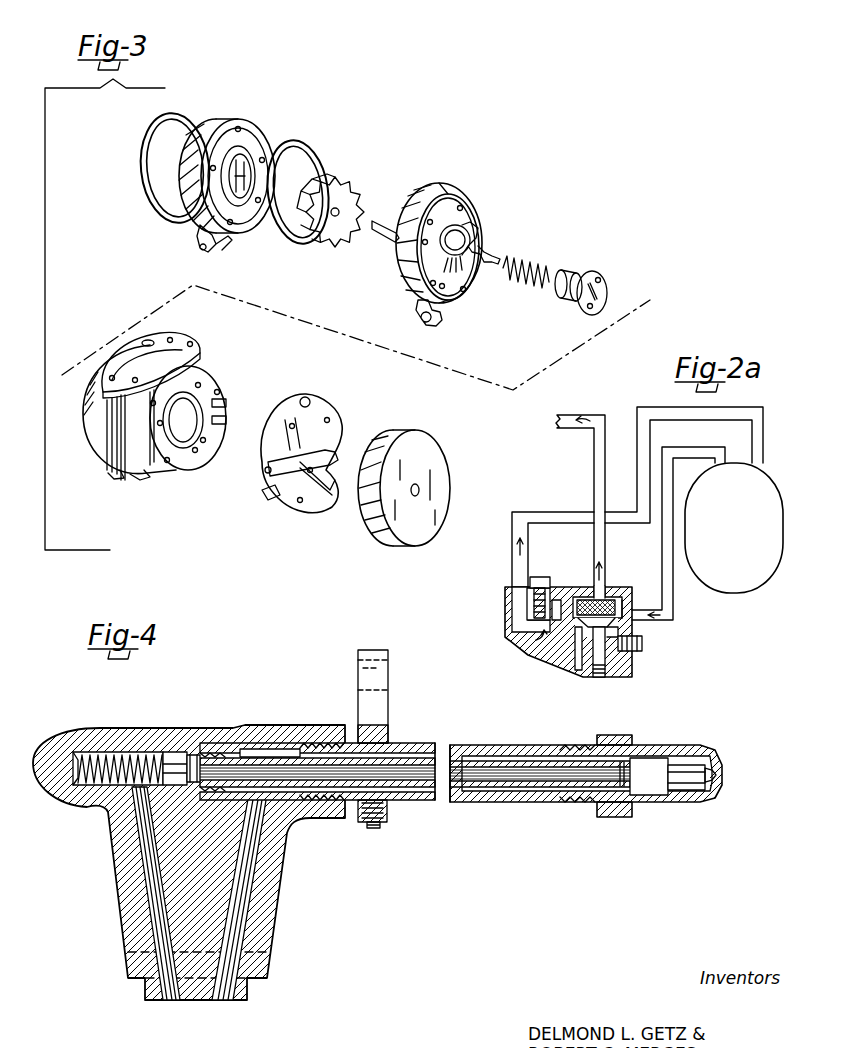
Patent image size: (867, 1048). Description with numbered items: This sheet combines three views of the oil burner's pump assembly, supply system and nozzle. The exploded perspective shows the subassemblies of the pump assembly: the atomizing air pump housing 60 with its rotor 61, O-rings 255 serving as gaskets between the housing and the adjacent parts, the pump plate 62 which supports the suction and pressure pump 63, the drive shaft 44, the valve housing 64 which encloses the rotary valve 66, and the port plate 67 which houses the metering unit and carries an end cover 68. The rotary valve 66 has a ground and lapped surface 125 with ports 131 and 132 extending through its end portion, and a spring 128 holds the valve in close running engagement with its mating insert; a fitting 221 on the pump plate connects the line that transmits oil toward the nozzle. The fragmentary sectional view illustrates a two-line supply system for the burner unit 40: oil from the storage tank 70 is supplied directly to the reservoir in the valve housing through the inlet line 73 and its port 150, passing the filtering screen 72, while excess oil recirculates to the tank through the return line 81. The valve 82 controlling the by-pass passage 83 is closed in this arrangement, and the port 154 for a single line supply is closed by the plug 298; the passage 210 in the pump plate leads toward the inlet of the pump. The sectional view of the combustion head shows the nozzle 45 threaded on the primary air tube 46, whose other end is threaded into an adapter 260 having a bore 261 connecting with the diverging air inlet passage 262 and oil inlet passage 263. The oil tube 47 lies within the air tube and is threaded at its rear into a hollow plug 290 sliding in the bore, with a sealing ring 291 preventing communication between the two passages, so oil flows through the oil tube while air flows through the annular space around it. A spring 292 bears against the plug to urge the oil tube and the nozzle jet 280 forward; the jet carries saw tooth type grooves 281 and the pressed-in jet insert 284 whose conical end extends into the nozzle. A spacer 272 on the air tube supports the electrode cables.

In FIG. 3, the O-rings 255 is at (152, 210).
In FIG. 3, the atomizing air pump housing 60 is at (232, 118).
In FIG. 3, the rotor 61 is at (359, 176).
In FIG. 3, the pump plate 62 is at (423, 190).
In FIG. 3, the suction and pressure pump 63 is at (470, 225).
In FIG. 3, the drive shaft 44 is at (384, 241).
In FIG. 3, the fitting 221 is at (420, 317).
In FIG. 3, the spring 128 is at (526, 286).
In FIG. 3, the rotary valve 66 is at (571, 270).
In FIG. 3, the port 132 is at (604, 280).
In FIG. 3, the ground and lapped surface 125 is at (608, 286).
In FIG. 3, the port 131 is at (575, 310).
In FIG. 3, the valve housing 64 is at (103, 418).
In FIG. 3, the port plate 67 is at (330, 412).
In FIG. 3, the end cover 68 is at (430, 440).
In FIG. 2A, the passage 210 is at (572, 412).
In FIG. 2A, the return line 81 is at (680, 412).
In FIG. 2A, the inlet line 73 is at (668, 596).
In FIG. 2A, the storage tank 70 is at (737, 592).
In FIG. 2A, the valve body 40 is at (527, 666).
In FIG. 2A, the filtering screen 72 is at (606, 600).
In FIG. 2A, the port 150 is at (638, 600).
In FIG. 2A, the valve 82 is at (546, 577).
In FIG. 2A, the by-pass passage 83 is at (564, 600).
In FIG. 2A, the port 154 is at (622, 650).
In FIG. 2A, the plug 298 is at (643, 646).
In FIG. 4, the adapter 260 is at (120, 893).
In FIG. 4, the oil inlet passage 263 is at (170, 1005).
In FIG. 4, the air inlet passage 262 is at (225, 1005).
In FIG. 4, the spring 292 is at (92, 735).
In FIG. 4, the sealing ring 291 is at (180, 742).
In FIG. 4, the hollow plug 290 is at (197, 742).
In FIG. 4, the bore 261 is at (270, 749).
In FIG. 4, the oil tube 47 is at (408, 772).
In FIG. 4, the primary air tube 46 is at (440, 790).
In FIG. 4, the spacer 272 is at (370, 655).
In FIG. 4, the nozzle 45 is at (665, 745).
In FIG. 4, the nozzle jet 280 is at (655, 792).
In FIG. 4, the saw tooth type grooves 281 is at (690, 790).
In FIG. 4, the jet insert 284 is at (724, 772).